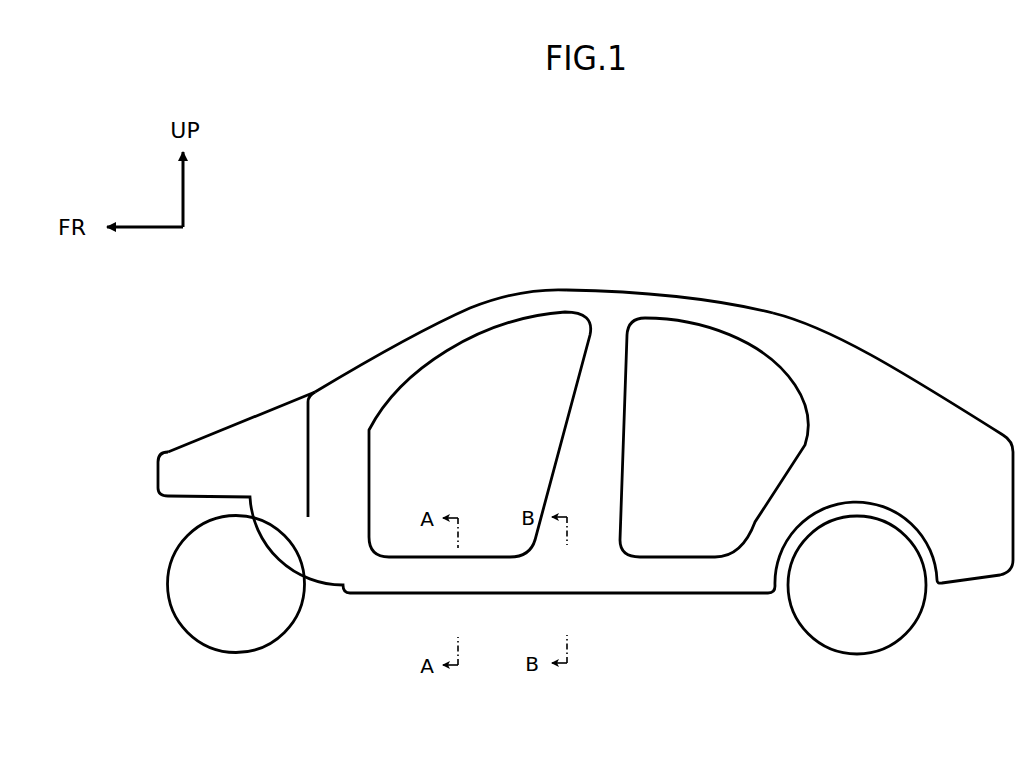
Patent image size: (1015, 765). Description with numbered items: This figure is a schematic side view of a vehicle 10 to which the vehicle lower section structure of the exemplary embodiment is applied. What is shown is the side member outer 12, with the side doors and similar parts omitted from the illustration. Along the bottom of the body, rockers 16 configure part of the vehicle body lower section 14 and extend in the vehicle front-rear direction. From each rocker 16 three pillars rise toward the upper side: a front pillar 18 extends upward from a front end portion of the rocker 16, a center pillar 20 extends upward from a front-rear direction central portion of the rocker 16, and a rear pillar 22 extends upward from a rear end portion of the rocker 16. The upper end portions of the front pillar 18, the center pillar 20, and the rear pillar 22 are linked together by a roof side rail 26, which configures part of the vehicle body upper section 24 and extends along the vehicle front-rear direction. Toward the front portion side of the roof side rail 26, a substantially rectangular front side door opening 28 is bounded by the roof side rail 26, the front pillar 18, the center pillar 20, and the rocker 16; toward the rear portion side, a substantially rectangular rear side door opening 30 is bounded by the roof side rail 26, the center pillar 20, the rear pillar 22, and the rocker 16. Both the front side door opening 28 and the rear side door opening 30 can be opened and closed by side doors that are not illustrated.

The vehicle 10 is at (808, 241).
The side member outer 12 is at (869, 352).
The vehicle body lower section 14 is at (746, 598).
The rocker 16 is at (658, 583).
The front pillar 18 is at (474, 434).
The center pillar 20 is at (707, 437).
The rear pillar 22 is at (818, 445).
The vehicle body upper section 24 is at (729, 299).
The roof side rail 26 is at (600, 293).
The front side door opening 28 is at (474, 441).
The rear side door opening 30 is at (702, 441).